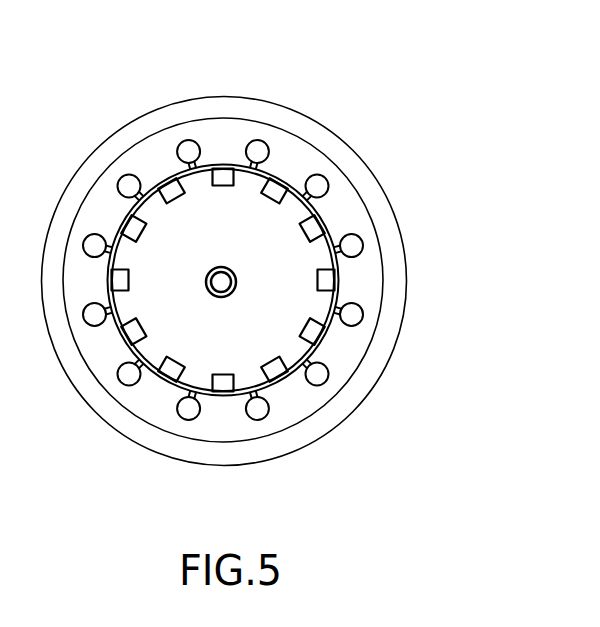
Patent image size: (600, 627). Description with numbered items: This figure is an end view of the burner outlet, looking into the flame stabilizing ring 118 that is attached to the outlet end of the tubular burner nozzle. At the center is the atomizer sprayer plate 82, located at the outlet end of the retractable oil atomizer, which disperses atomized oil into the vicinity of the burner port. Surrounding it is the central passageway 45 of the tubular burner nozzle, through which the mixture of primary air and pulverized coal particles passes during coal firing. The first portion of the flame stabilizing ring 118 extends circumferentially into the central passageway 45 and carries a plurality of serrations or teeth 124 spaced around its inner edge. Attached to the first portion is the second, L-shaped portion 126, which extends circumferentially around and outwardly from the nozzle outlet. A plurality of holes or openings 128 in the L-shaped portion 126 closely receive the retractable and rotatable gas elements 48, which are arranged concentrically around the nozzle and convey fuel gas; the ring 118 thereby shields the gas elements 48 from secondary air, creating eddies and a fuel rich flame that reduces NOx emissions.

The central passageway 45 is at (226, 232).
The retractable and rotatable gas elements 48 is at (325, 378).
The atomizer sprayer plate 82 is at (226, 275).
The flame stabilizing ring 118 is at (330, 222).
The serrations or teeth 124 is at (173, 187).
The second, L-shaped portion 126 is at (158, 435).
The holes or openings 128 is at (270, 415).